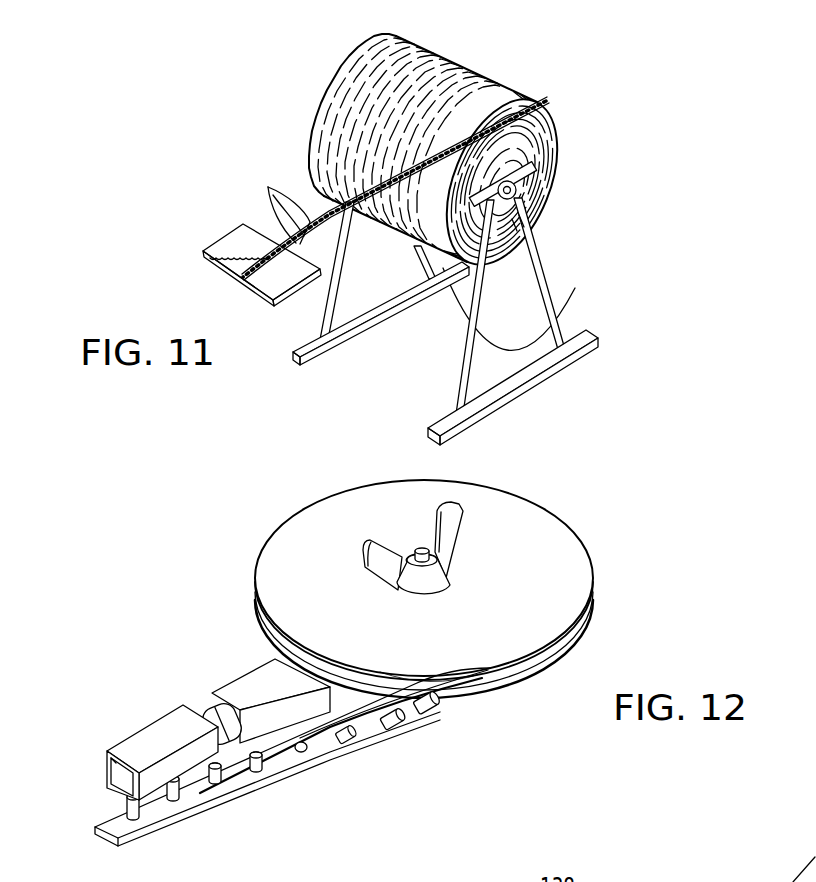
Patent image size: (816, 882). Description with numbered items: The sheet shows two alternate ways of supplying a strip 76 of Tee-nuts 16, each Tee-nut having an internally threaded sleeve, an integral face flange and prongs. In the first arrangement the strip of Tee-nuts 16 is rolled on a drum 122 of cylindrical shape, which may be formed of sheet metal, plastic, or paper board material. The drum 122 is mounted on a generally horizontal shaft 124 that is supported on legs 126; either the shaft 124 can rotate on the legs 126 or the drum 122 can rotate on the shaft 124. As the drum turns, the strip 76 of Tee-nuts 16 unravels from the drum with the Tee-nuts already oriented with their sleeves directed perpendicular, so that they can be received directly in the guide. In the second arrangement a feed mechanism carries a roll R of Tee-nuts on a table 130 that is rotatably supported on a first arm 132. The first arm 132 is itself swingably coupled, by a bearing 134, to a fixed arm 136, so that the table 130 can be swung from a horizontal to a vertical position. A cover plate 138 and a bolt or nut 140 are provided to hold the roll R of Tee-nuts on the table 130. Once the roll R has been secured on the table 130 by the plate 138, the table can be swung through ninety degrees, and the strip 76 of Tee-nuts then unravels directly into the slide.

In FIG. 11, the drum 122 is at (560, 101).
In FIG. 11, the shaft 124 is at (516, 189).
In FIG. 11, the legs 126 is at (546, 276).
In FIG. 11, the Tee-nuts 16 is at (262, 231).
In FIG. 11, the strip 76 is at (314, 198).
In FIG. 12, the strip 76 is at (197, 793).
In FIG. 12, the table 130 is at (250, 610).
In FIG. 12, the first arm 132 is at (242, 686).
In FIG. 12, the bearing 134 is at (206, 708).
In FIG. 12, the fixed arm 136 is at (148, 746).
In FIG. 12, the cover plate 138 is at (313, 530).
In FIG. 12, the bolt or nut 140 is at (462, 512).
In FIG. 12, the roll R is at (468, 685).